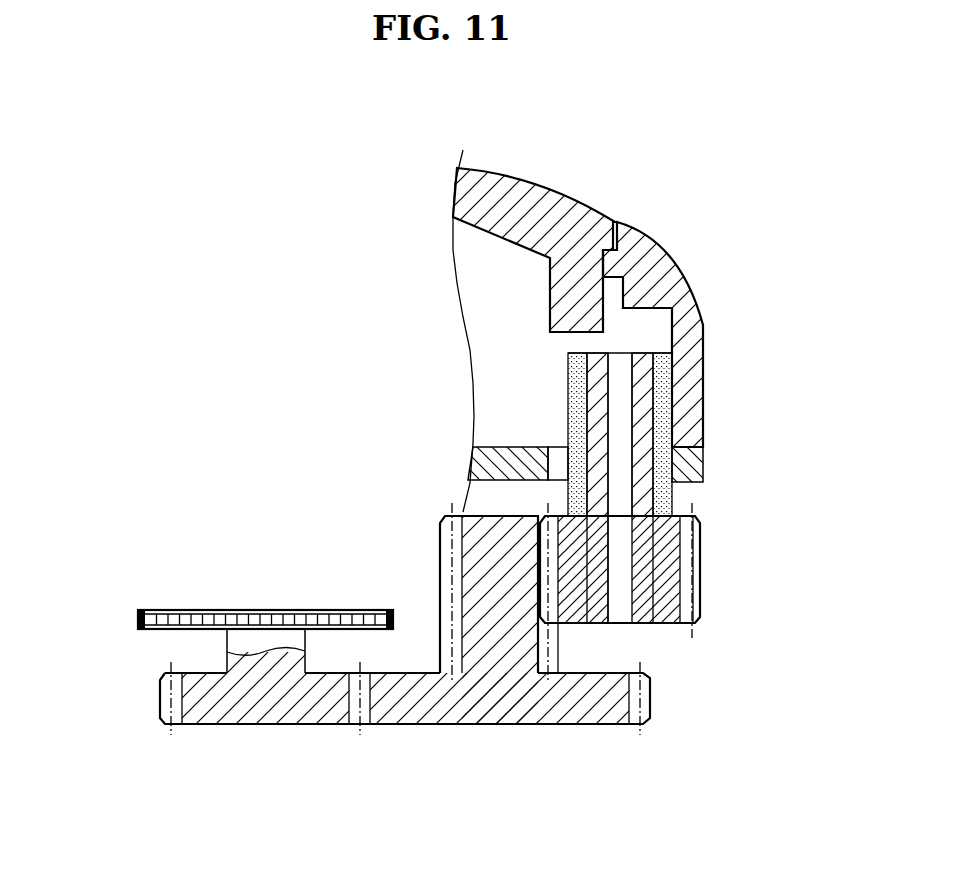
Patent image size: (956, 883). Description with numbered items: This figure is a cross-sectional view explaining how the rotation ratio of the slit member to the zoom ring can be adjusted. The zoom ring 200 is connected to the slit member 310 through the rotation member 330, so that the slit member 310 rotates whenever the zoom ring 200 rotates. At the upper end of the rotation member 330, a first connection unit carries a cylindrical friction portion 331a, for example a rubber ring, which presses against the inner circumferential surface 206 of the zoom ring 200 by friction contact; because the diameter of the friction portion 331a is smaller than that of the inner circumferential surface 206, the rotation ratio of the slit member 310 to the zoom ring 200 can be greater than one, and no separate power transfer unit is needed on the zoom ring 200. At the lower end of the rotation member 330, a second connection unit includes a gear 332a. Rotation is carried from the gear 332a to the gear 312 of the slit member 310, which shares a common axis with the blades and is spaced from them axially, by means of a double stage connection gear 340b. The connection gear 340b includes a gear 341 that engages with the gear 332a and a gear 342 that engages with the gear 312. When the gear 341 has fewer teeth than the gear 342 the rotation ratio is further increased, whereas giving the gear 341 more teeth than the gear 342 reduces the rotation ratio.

The zoom ring 200 is at (662, 253).
The inner circumferential surface 206 is at (690, 331).
The slit member 310 is at (138, 622).
The gear 312 is at (163, 703).
The rotation member 330 is at (698, 495).
The friction portion 331a is at (672, 498).
The gear 332a is at (697, 580).
The connection gear 340b is at (681, 619).
The gear 341 is at (555, 647).
The gear 342 is at (643, 703).